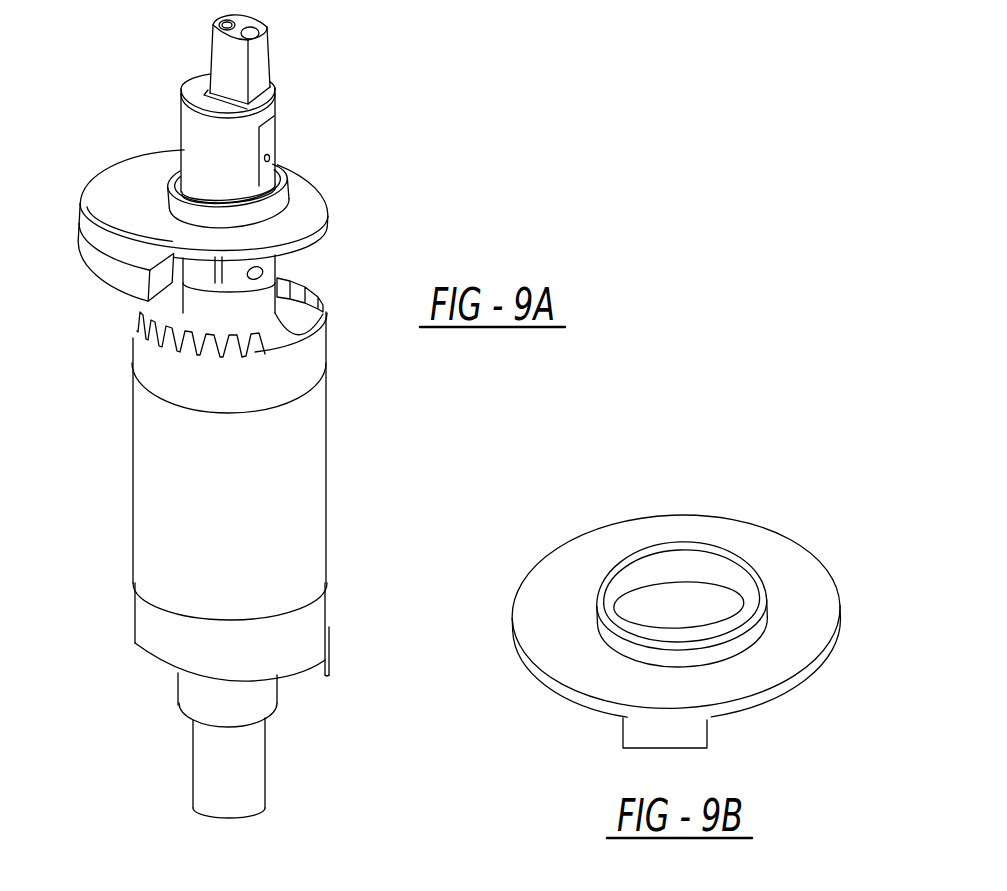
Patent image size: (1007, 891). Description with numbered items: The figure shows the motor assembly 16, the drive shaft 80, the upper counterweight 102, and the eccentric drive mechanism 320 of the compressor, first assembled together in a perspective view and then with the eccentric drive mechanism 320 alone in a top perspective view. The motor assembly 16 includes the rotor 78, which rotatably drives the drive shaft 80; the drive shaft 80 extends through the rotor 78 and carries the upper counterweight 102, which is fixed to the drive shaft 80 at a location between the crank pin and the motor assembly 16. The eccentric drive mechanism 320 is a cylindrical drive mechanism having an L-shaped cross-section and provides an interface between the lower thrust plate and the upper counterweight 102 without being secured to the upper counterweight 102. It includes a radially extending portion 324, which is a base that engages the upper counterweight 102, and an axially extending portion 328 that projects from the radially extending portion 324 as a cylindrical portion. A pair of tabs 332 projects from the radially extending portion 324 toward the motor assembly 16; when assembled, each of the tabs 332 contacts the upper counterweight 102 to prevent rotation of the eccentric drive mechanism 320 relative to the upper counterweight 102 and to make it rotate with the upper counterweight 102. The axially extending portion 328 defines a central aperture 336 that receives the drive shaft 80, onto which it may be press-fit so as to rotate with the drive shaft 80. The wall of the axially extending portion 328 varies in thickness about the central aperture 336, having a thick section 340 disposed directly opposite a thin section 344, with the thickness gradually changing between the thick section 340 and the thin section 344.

In FIG. 9A, the motor assembly 16 is at (88, 448).
In FIG. 9A, the rotor 78 is at (298, 488).
In FIG. 9A, the drive shaft 80 is at (245, 780).
In FIG. 9A, the upper counterweight 102 is at (113, 273).
In FIG. 9A, the eccentric drive mechanism 320 is at (298, 180).
In FIG. 9B, the eccentric drive mechanism 320 is at (718, 490).
In FIG. 9A, the radially extending portion 324 is at (300, 200).
In FIG. 9B, the radially extending portion 324 is at (802, 638).
In FIG. 9A, the axially extending portion 328 is at (178, 205).
In FIG. 9B, the axially extending portion 328 is at (745, 612).
In FIG. 9B, the tabs 332 is at (647, 737).
In FIG. 9B, the central aperture 336 is at (672, 600).
In FIG. 9B, the thick section 340 is at (735, 625).
In FIG. 9B, the thin section 344 is at (610, 572).